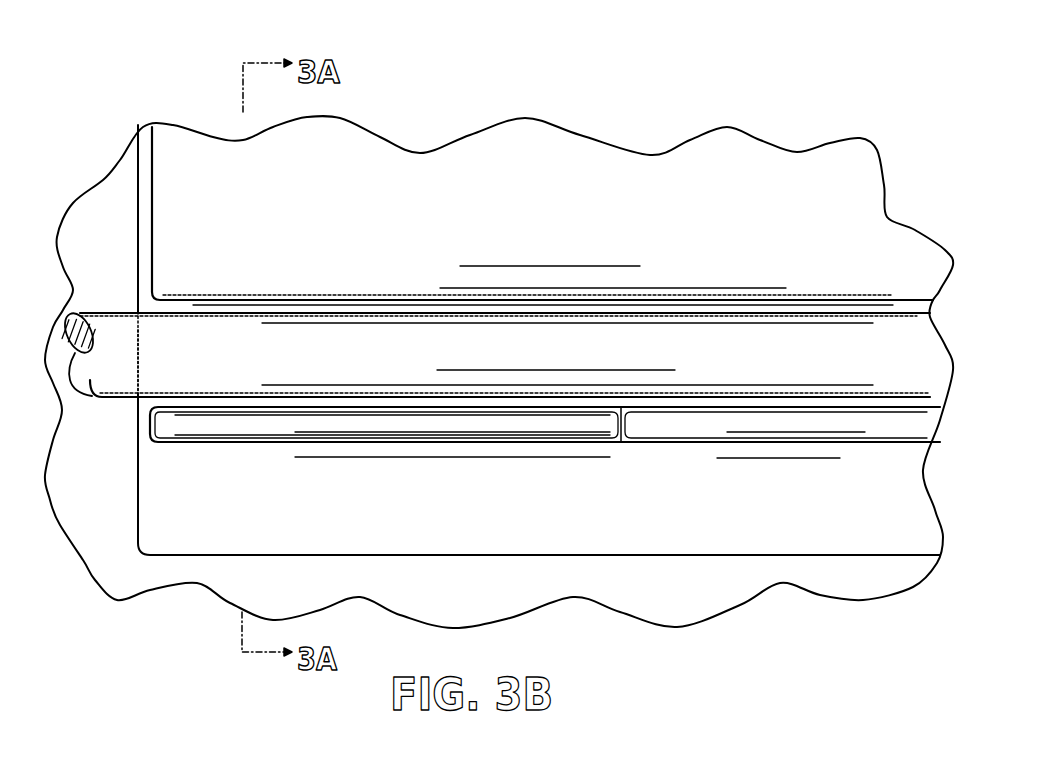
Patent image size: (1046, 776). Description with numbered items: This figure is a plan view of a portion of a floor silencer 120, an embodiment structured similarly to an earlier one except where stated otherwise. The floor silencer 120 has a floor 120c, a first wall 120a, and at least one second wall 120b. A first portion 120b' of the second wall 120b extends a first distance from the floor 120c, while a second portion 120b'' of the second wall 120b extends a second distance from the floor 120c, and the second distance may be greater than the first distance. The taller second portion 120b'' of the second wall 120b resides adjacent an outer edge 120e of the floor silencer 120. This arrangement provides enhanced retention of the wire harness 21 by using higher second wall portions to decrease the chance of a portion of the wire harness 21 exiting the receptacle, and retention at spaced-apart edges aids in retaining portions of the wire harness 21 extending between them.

The floor silencer 120 is at (130, 221).
The first wall 120a is at (225, 300).
The second wall 120b is at (545, 507).
The first portion of second wall 120b' is at (776, 472).
The second portion of second wall 120b'' is at (386, 477).
The floor 120c is at (165, 338).
The outer edge 120e is at (138, 362).
The wire harness 21 is at (90, 382).